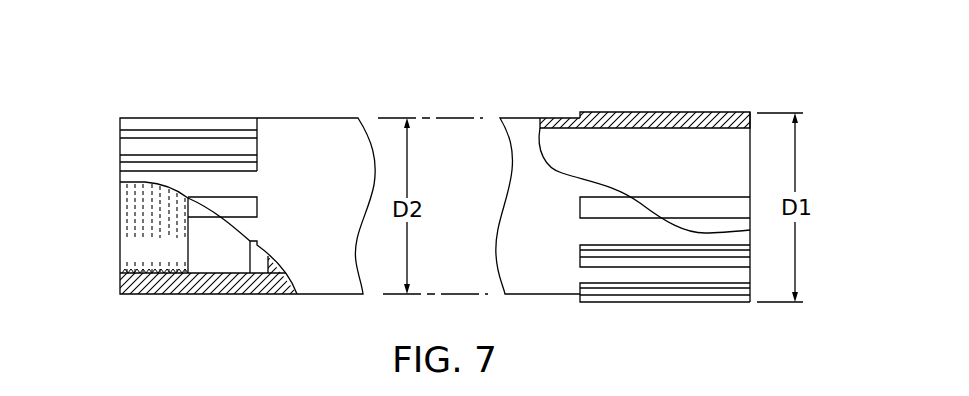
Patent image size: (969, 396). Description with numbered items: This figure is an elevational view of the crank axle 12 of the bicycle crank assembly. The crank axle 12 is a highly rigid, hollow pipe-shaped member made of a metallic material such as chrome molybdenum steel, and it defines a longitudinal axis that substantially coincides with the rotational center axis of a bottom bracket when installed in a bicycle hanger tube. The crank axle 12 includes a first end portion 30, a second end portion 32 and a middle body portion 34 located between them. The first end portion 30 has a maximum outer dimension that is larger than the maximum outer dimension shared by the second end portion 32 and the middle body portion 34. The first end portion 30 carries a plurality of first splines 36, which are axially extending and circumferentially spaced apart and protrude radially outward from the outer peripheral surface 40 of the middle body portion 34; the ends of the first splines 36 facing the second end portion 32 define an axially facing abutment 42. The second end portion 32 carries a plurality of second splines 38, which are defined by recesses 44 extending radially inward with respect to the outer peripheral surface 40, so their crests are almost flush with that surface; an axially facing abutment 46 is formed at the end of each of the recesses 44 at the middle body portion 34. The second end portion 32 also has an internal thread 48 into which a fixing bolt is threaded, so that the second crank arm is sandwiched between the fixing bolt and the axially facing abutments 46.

The crank axle 12 is at (402, 78).
The first end portion 30 is at (690, 313).
The second end portion 32 is at (143, 304).
The middle body portion 34 is at (325, 306).
The first splines 36 is at (630, 208).
The second splines 38 is at (157, 149).
The outer peripheral surface 40 is at (312, 118).
The axially facing abutment 42 is at (578, 203).
The recesses 44 is at (128, 168).
The axially facing abutment 46 is at (257, 163).
The internal thread 48 is at (150, 273).